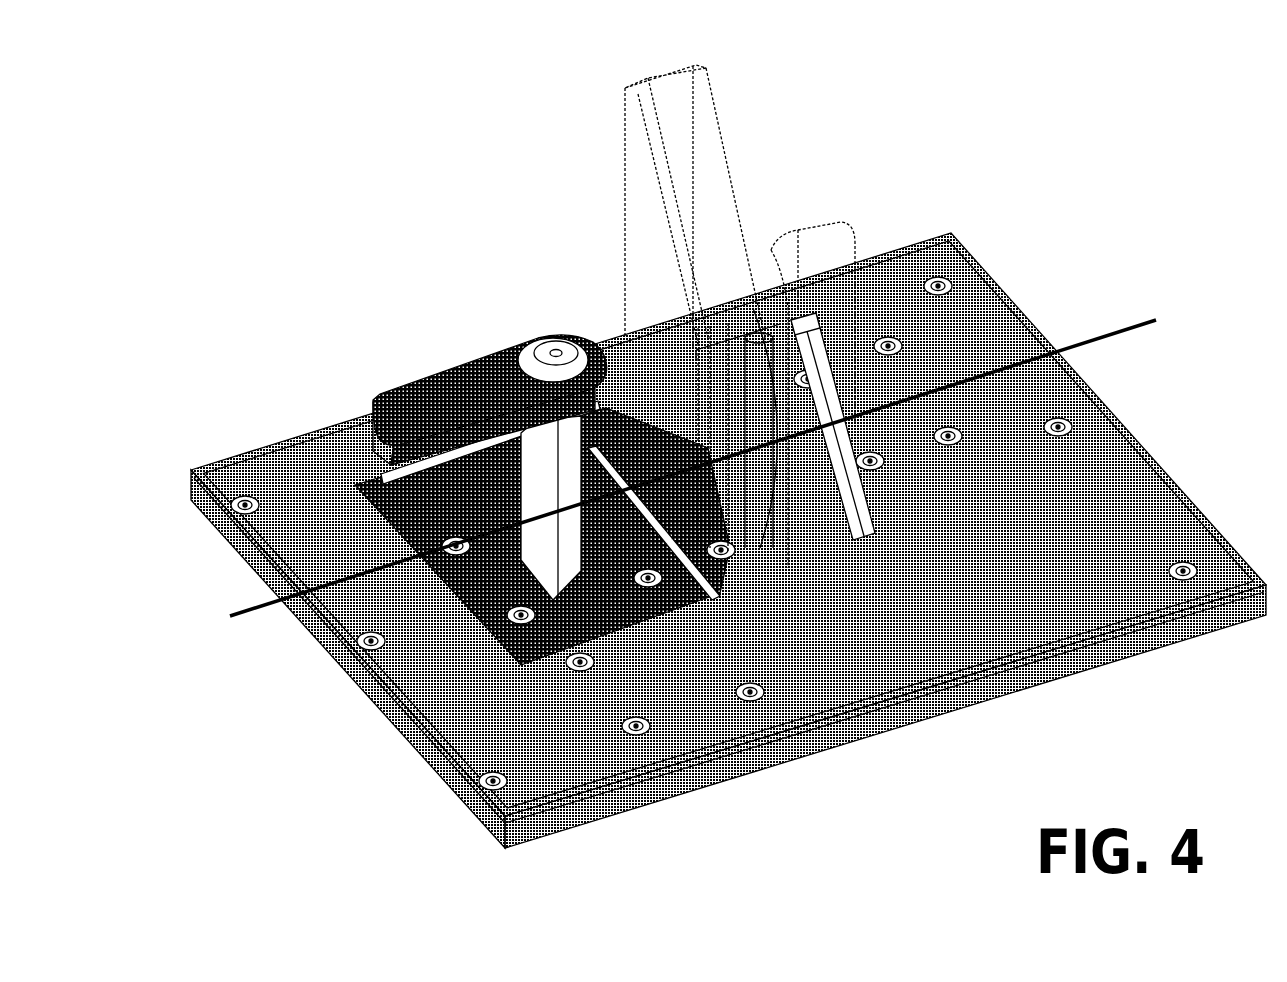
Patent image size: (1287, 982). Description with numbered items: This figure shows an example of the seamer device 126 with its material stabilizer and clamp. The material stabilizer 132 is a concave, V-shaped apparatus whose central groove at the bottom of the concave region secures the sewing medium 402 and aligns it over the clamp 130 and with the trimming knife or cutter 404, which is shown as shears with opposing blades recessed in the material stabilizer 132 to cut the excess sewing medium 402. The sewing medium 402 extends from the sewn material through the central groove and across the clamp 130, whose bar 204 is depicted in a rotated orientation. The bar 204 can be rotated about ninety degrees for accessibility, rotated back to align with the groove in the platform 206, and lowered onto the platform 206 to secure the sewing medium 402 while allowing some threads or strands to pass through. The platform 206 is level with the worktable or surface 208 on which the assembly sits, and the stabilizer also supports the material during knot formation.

The seamer device 126 is at (945, 150).
The clamp 130 is at (459, 330).
The material stabilizer 132 is at (731, 196).
The bar 204 is at (364, 376).
The platform 206 is at (360, 476).
The worktable or surface 208 is at (1185, 491).
The sewing medium 402 is at (1113, 316).
The trimming knife or cutter 404 is at (711, 362).